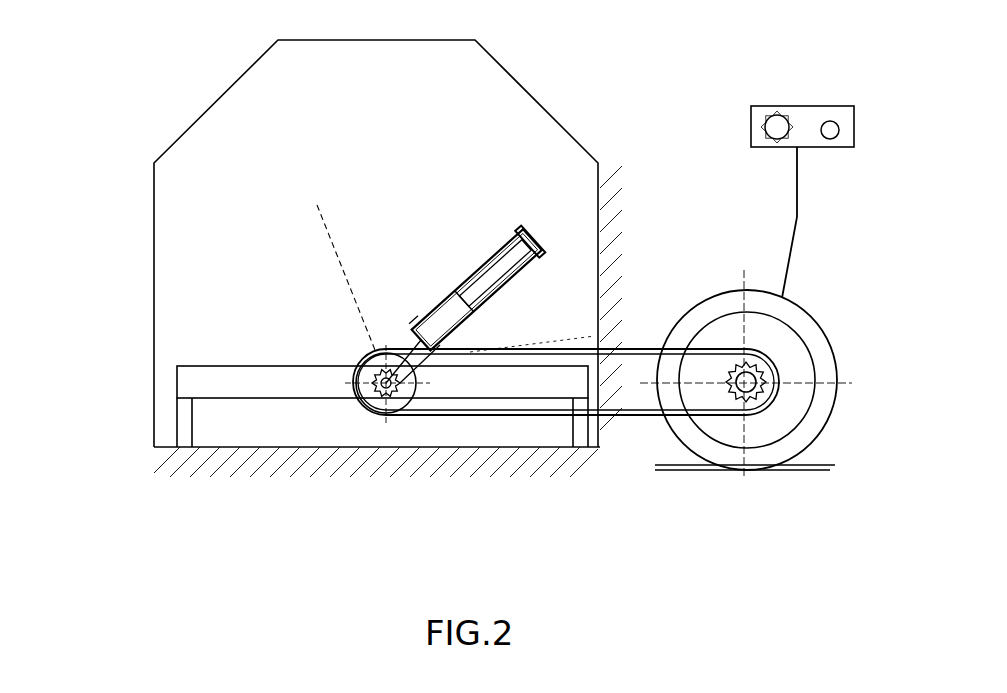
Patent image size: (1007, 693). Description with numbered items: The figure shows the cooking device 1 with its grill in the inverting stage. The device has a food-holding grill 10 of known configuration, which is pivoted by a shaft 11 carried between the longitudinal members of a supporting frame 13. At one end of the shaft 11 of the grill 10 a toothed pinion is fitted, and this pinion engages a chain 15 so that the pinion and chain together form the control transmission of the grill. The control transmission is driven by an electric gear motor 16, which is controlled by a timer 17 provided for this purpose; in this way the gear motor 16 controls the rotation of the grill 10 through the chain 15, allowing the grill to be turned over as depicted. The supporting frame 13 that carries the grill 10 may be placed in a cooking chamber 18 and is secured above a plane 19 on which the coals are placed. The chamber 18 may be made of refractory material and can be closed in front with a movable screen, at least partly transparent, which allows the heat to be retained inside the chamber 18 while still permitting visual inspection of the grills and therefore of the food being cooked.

The cooking device 1 is at (82, 182).
The food-holding grill 10 is at (475, 262).
The shaft 11 is at (372, 398).
The supporting frame 13 is at (212, 365).
The chain 15 is at (553, 424).
The electric gear motor 16 is at (843, 300).
The timer 17 is at (836, 97).
The cooking chamber 18 is at (272, 108).
The plane 19 is at (212, 441).